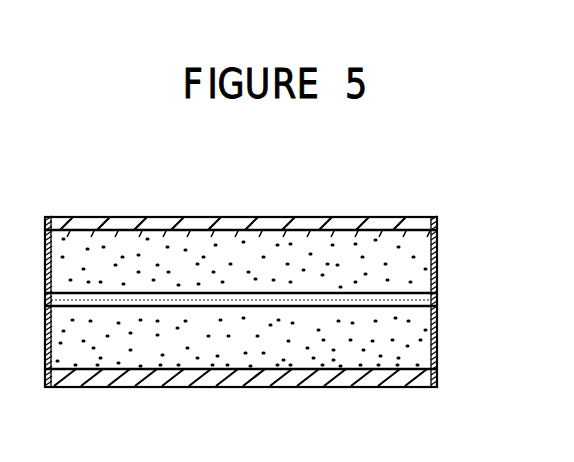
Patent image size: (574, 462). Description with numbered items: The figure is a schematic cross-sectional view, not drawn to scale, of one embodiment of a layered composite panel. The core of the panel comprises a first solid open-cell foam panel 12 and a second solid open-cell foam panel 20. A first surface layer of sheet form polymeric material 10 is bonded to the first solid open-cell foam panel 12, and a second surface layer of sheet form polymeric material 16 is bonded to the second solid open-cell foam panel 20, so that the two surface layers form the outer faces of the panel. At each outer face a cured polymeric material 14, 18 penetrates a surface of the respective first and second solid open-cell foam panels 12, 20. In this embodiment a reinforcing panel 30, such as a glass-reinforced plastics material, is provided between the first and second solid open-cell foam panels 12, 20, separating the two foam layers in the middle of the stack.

The first surface layer of a sheet form polymeric material 10 is at (398, 217).
The first solid open-cell foam panel 12 is at (431, 268).
The cured polymeric material 14 is at (437, 215).
The second surface layer of a sheet form polymeric material 16 is at (352, 387).
The cured polymeric material 18 is at (437, 368).
The second solid open-cell foam panel 20 is at (423, 329).
The reinforcing panel 30 is at (513, 298).